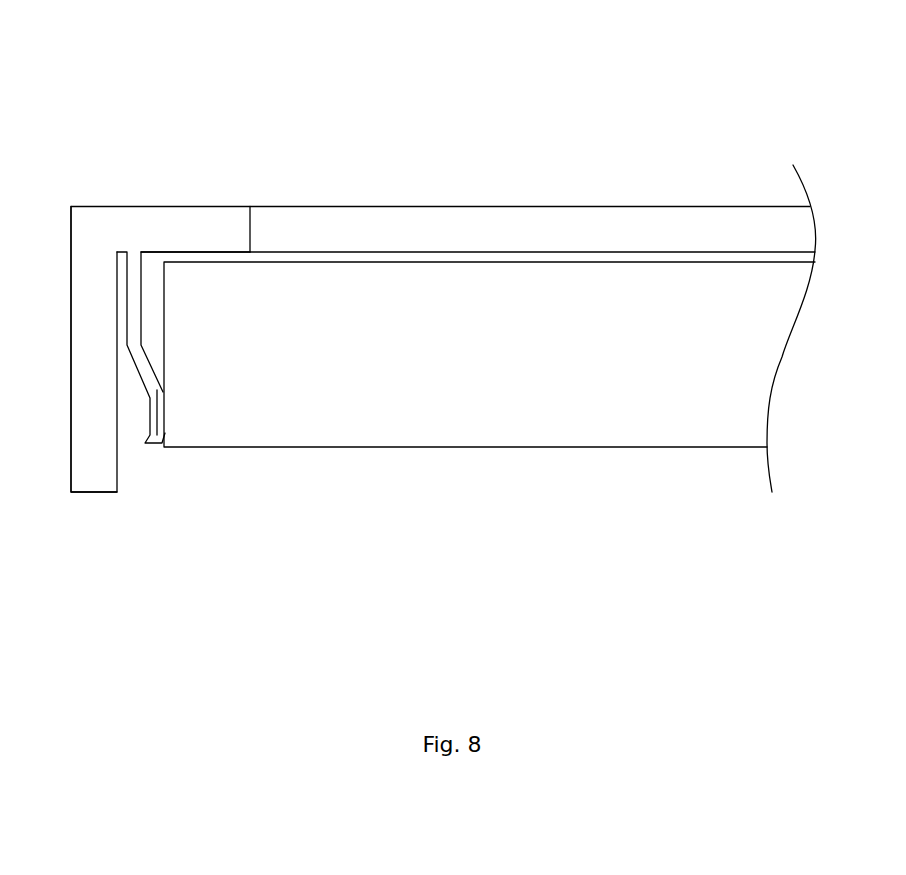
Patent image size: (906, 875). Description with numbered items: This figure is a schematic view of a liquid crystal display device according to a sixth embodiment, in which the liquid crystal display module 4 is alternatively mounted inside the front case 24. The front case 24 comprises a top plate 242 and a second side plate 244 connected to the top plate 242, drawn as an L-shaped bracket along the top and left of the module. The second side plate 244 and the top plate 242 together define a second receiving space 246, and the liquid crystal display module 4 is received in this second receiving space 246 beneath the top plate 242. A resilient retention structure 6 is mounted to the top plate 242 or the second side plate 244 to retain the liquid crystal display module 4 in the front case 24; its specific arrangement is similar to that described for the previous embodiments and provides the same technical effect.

The front case 24 is at (77, 71).
The top plate 242 is at (218, 227).
The second side plate 244 is at (90, 357).
The second receiving space 246 is at (578, 258).
The liquid crystal display module 4 is at (493, 395).
The resilient retention structures 6 is at (145, 372).